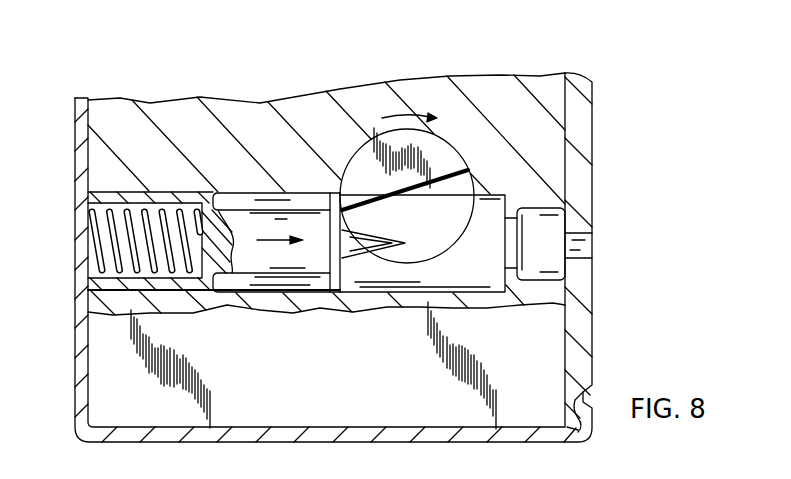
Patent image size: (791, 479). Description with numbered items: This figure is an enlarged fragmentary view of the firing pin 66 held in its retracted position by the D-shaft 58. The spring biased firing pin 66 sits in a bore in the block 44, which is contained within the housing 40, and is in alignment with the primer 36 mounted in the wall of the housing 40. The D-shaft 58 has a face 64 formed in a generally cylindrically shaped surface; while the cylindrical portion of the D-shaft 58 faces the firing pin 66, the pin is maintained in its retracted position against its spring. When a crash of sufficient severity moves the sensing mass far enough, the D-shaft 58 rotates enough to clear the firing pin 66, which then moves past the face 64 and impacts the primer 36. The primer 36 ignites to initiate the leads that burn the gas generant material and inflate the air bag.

The primer 36 is at (553, 235).
The housing 40 is at (592, 353).
The block 44 is at (222, 113).
The D-shaft 58 is at (362, 162).
The face 64 is at (428, 182).
The firing pin 66 is at (250, 228).